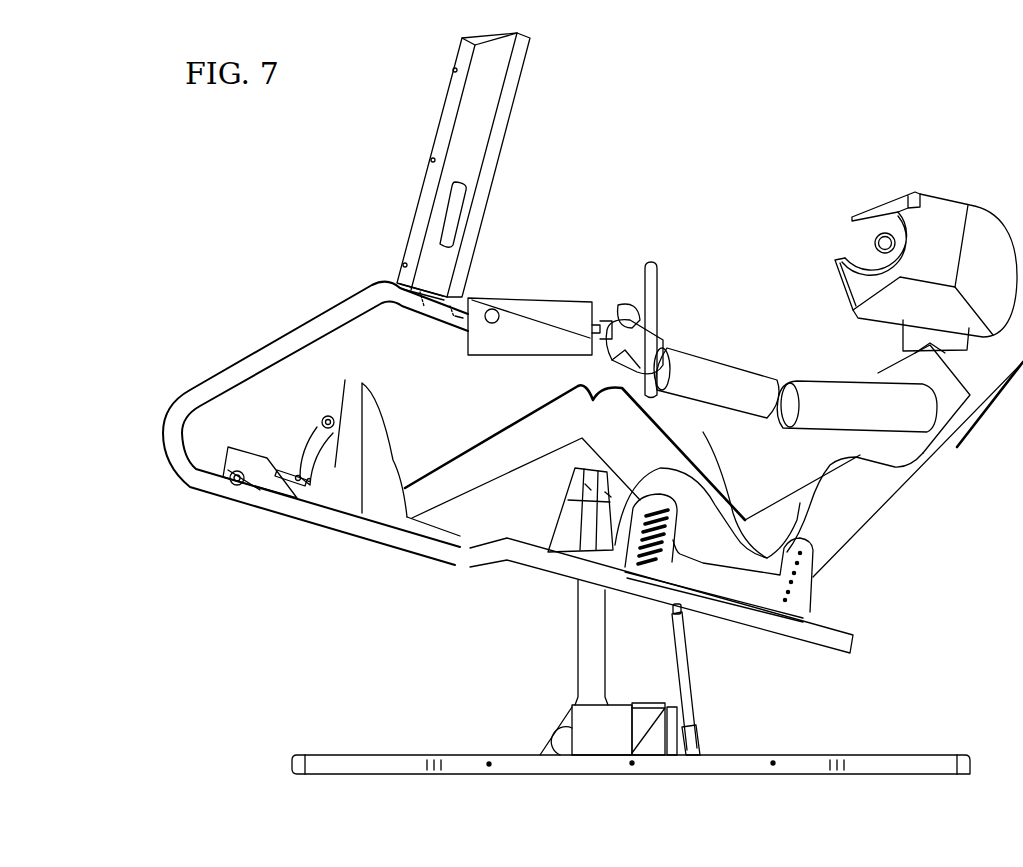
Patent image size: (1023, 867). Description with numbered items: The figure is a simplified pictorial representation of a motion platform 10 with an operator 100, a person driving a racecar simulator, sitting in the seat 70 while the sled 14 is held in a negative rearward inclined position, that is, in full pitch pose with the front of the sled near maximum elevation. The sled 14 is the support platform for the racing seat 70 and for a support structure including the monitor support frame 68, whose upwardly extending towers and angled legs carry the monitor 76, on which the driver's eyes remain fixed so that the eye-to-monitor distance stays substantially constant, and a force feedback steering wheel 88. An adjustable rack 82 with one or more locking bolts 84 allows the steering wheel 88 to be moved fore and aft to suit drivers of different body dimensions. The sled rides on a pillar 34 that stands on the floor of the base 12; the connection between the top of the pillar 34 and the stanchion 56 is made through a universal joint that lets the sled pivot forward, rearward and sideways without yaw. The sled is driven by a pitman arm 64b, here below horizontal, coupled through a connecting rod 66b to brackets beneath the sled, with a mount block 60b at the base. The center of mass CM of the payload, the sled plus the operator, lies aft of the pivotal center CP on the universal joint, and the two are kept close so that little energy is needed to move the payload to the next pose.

The motion platform 10 is at (750, 140).
The base 12 is at (810, 742).
The sled 14 is at (236, 346).
The pillar 34 is at (577, 633).
The stanchion 56 is at (553, 520).
The actuator mount block 60b is at (580, 720).
The pitman arm 64b is at (689, 730).
The connecting rod 66b is at (691, 672).
The monitor support frame 68 is at (338, 304).
The seat 70 is at (878, 523).
The monitor 76 is at (453, 95).
The adjustable rack 82 is at (470, 346).
The locking bolt 84 is at (455, 316).
The force feedback steering wheel 88 is at (654, 262).
The operator 100 is at (856, 380).
The pivotal center CP is at (588, 487).
The center of mass CM is at (608, 495).